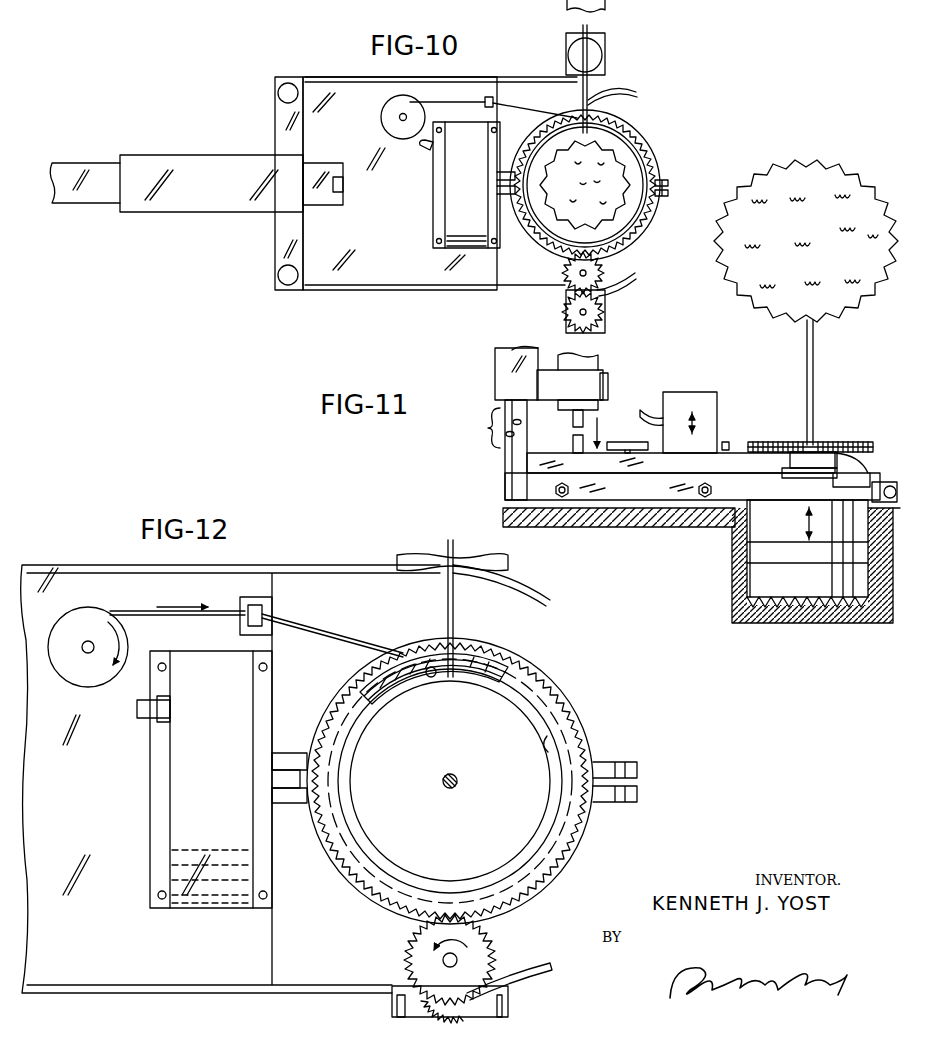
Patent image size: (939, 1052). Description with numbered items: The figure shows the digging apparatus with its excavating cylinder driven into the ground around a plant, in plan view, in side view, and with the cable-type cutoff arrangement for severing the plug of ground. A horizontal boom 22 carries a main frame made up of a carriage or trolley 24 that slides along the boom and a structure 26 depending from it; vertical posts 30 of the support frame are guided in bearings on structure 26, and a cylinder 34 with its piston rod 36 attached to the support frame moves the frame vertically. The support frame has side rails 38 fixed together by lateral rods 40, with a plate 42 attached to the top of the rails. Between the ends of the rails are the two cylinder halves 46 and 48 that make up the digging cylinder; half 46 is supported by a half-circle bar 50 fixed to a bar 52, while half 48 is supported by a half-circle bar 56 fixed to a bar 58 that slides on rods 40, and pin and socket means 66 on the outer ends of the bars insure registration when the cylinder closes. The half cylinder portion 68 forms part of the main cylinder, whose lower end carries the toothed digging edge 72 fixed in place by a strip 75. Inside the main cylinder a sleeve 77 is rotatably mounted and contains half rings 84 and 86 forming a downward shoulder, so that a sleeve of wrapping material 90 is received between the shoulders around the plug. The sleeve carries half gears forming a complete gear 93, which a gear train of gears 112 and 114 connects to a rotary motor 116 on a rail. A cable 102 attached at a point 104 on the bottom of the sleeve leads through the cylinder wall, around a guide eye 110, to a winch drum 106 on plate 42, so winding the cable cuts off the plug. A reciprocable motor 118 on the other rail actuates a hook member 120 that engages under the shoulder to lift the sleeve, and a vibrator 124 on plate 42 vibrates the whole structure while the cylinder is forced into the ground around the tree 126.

In FIG. 10, the horizontal boom 22 is at (97, 192).
In FIG. 10, the carriage or trolley 24 is at (200, 198).
In FIG. 10, the structure 26 is at (276, 126).
In FIG. 10, the vertical posts 30 is at (281, 281).
In FIG. 11, the vertical posts 30 is at (505, 392).
In FIG. 11, the cylinder 34 is at (591, 358).
In FIG. 11, the rod 36 is at (572, 435).
In FIG. 11, the side rails 38 is at (630, 476).
In FIG. 11, the lateral rods 40 is at (707, 501).
In FIG. 10, the plate 42 is at (381, 270).
In FIG. 12, the plate 42 is at (106, 857).
In FIG. 10, the cylinder half 46 is at (653, 232).
In FIG. 12, the cylinder half 46 is at (546, 912).
In FIG. 10, the cylinder half 48 is at (648, 120).
In FIG. 12, the cylinder half 48 is at (619, 666).
In FIG. 12, the bar 50 is at (551, 667).
In FIG. 12, the bar 52 is at (297, 803).
In FIG. 12, the bar 56 is at (586, 845).
In FIG. 12, the bar 58 is at (290, 753).
In FIG. 10, the pin and socket means 66 is at (678, 183).
In FIG. 11, the pin and socket means 66 is at (890, 468).
In FIG. 12, the pin and socket means 66 is at (649, 771).
In FIG. 11, the half cylinder portion 68 is at (799, 534).
In FIG. 11, the half cylinder digging edge 72 is at (790, 580).
In FIG. 11, the strip 75 is at (762, 553).
In FIG. 12, the sleeve 77 is at (492, 655).
In FIG. 12, the half ring 84 is at (375, 843).
In FIG. 12, the half ring 86 is at (551, 748).
In FIG. 12, the sleeve of wrapping material 90 is at (440, 640).
In FIG. 10, the gear 93 is at (660, 207).
In FIG. 11, the gear 93 is at (857, 440).
In FIG. 12, the gear 93 is at (550, 880).
In FIG. 10, the cable 102 is at (531, 107).
In FIG. 11, the cable 102 is at (730, 445).
In FIG. 12, the cable 102 is at (300, 628).
In FIG. 12, the point 104 is at (380, 650).
In FIG. 10, the winch drum 106 is at (381, 117).
In FIG. 11, the winch drum 106 is at (612, 440).
In FIG. 12, the winch drum 106 is at (80, 668).
In FIG. 11, the guide roller or eye 110 is at (725, 440).
In FIG. 12, the guide roller or eye 110 is at (270, 611).
In FIG. 10, the gear 112 is at (598, 275).
In FIG. 12, the gear 112 is at (476, 958).
In FIG. 10, the gear 114 is at (601, 309).
In FIG. 11, the gear 114 is at (822, 441).
In FIG. 12, the gear 114 is at (472, 1011).
In FIG. 11, the rotary motor 116 is at (800, 458).
In FIG. 10, the reciprocable motor 118 is at (601, 50).
In FIG. 10, the hook member 120 is at (590, 100).
In FIG. 12, the hook member 120 is at (455, 612).
In FIG. 10, the vibrator 124 is at (445, 198).
In FIG. 11, the vibrator 124 is at (700, 392).
In FIG. 12, the vibrator 124 is at (213, 777).
In FIG. 10, the tree 126 is at (615, 173).
In FIG. 11, the tree 126 is at (815, 360).
In FIG. 12, the tree 126 is at (457, 777).